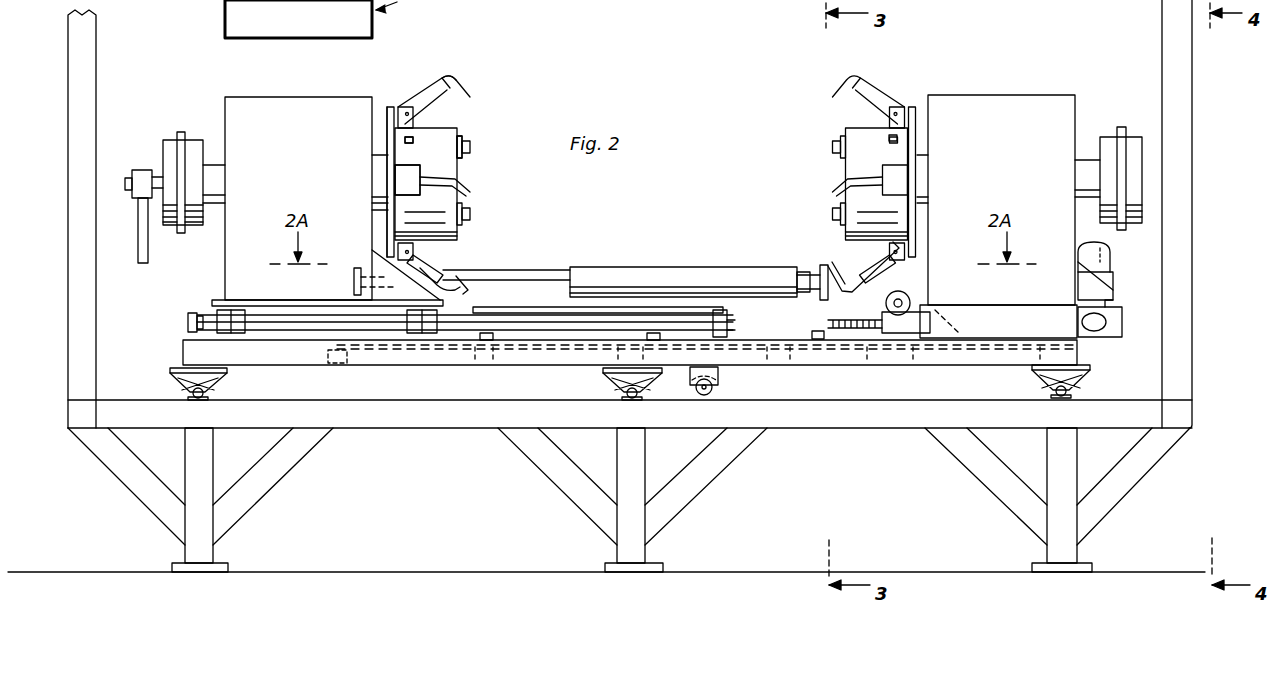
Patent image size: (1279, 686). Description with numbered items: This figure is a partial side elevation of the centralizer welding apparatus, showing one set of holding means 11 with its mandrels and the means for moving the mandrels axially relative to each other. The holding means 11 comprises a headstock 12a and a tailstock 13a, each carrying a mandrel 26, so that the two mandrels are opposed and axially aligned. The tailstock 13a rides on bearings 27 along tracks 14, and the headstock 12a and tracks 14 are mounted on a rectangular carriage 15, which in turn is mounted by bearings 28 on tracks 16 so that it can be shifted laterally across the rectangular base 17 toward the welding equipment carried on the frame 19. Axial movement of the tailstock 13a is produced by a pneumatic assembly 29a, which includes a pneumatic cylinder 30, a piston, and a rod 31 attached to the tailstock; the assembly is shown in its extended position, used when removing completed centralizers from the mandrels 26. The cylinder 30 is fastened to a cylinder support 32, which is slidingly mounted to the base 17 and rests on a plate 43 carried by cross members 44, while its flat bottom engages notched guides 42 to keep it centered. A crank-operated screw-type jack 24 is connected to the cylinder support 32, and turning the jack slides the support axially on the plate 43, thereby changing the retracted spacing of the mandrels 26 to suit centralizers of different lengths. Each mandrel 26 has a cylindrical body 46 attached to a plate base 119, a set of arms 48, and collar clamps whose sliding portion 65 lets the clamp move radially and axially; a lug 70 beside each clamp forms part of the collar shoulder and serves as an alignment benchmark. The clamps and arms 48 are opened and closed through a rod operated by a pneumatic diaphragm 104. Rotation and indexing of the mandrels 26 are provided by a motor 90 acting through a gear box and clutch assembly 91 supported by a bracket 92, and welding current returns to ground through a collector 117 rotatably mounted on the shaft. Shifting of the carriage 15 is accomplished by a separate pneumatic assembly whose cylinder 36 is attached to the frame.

The holding means 11 is at (525, 78).
The headstock 12a is at (996, 90).
The tailstock 13a is at (294, 94).
The tracks 14 is at (188, 321).
The carriage 15 is at (1080, 352).
The tracks 16 is at (1047, 400).
The base 17 is at (1194, 408).
The frame 19 is at (1192, 96).
The screw-type jack 24 is at (886, 303).
The mandrel 26 is at (478, 104).
The bearings 27 is at (217, 302).
The bearings 28 is at (226, 383).
The pneumatic assembly 29a is at (681, 260).
The pneumatic cylinder 30 is at (597, 266).
The rod 31 is at (503, 270).
The cylinder support 32 is at (801, 340).
The cylinder 36 is at (721, 377).
The notched guides 42 is at (815, 332).
The plate 43 is at (858, 358).
The cross members 44 is at (345, 367).
The cylindrical body 46 is at (462, 172).
The arms 48 is at (428, 97).
The sliding portion 65 is at (470, 148).
The lug 70 is at (413, 140).
The motor 90 is at (1112, 258).
The gear box and clutch assembly 91 is at (1122, 322).
The bracket 92 is at (1113, 286).
The pneumatic diaphragm 104 is at (165, 140).
The collector 117 is at (136, 262).
The plate base 119 is at (391, 107).